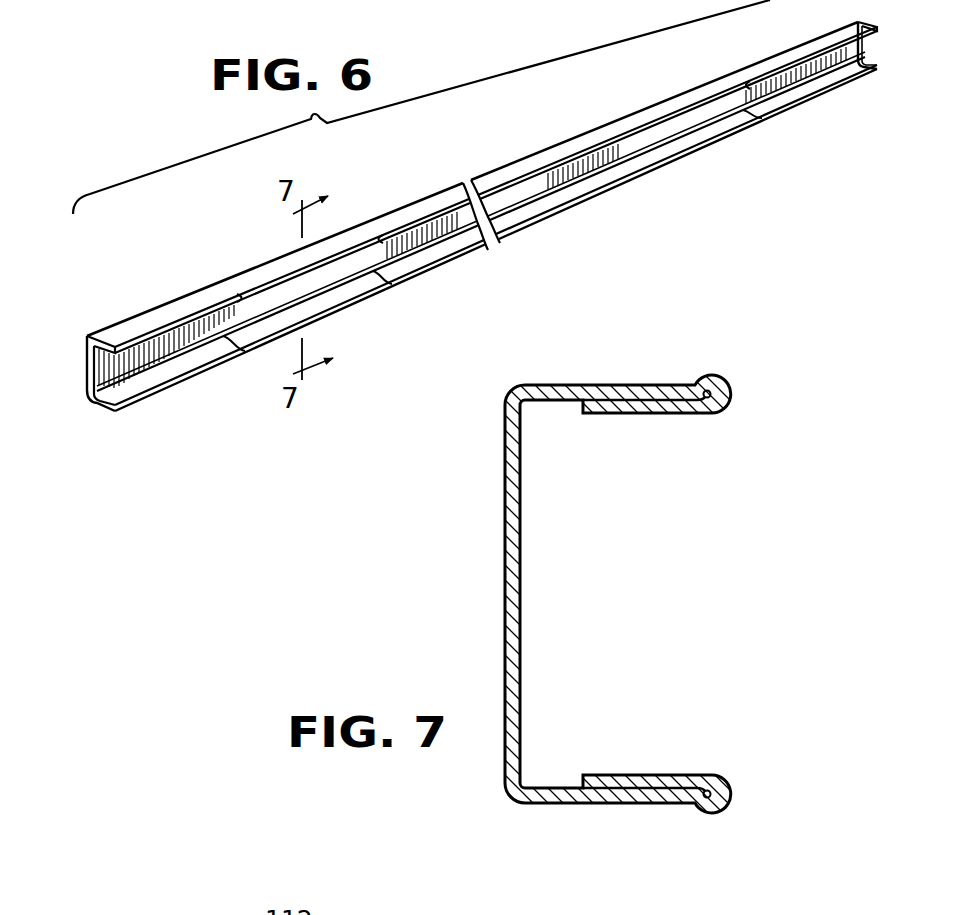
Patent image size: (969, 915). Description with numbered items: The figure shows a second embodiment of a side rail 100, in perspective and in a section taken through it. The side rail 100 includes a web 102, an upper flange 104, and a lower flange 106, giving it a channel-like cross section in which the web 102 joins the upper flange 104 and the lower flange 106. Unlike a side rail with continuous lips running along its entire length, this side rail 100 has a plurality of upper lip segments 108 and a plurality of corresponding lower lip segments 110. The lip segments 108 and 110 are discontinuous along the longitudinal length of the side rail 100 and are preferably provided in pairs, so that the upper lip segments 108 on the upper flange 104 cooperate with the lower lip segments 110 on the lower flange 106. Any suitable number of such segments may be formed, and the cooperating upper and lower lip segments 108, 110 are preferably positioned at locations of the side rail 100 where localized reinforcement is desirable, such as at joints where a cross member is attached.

In FIG. 6, the side rail 100 is at (168, 252).
In FIG. 7, the side rail 100 is at (462, 556).
In FIG. 6, the web 102 is at (88, 380).
In FIG. 7, the web 102 is at (509, 616).
In FIG. 6, the upper flange 104 is at (113, 346).
In FIG. 7, the upper flange 104 is at (624, 393).
In FIG. 6, the lower flange 106 is at (123, 390).
In FIG. 7, the lower flange 106 is at (628, 800).
In FIG. 6, the upper lip segments 108 is at (323, 266).
In FIG. 7, the upper lip segments 108 is at (646, 412).
In FIG. 6, the lower lip segments 110 is at (330, 303).
In FIG. 7, the lower lip segments 110 is at (628, 775).